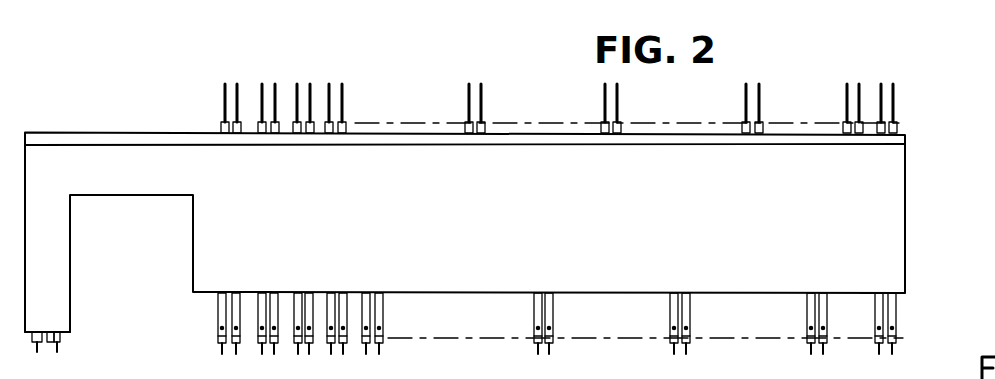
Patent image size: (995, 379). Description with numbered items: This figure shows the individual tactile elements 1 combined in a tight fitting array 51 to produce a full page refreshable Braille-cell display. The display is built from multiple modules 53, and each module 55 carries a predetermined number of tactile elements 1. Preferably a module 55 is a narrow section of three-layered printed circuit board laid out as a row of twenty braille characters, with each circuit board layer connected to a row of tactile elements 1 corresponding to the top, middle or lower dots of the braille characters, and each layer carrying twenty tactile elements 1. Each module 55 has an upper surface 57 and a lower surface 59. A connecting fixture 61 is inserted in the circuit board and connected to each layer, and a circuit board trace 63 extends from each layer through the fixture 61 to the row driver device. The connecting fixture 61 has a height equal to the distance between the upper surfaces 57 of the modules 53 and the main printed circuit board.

The array 51 is at (189, 124).
The modules 53 is at (237, 83).
The module 55 is at (311, 84).
The upper surface 57 is at (907, 135).
The lower surface 59 is at (905, 300).
The connecting fixture 61 is at (25, 249).
The circuit board trace 63 is at (62, 340).
The tactile elements 1 is at (241, 345).